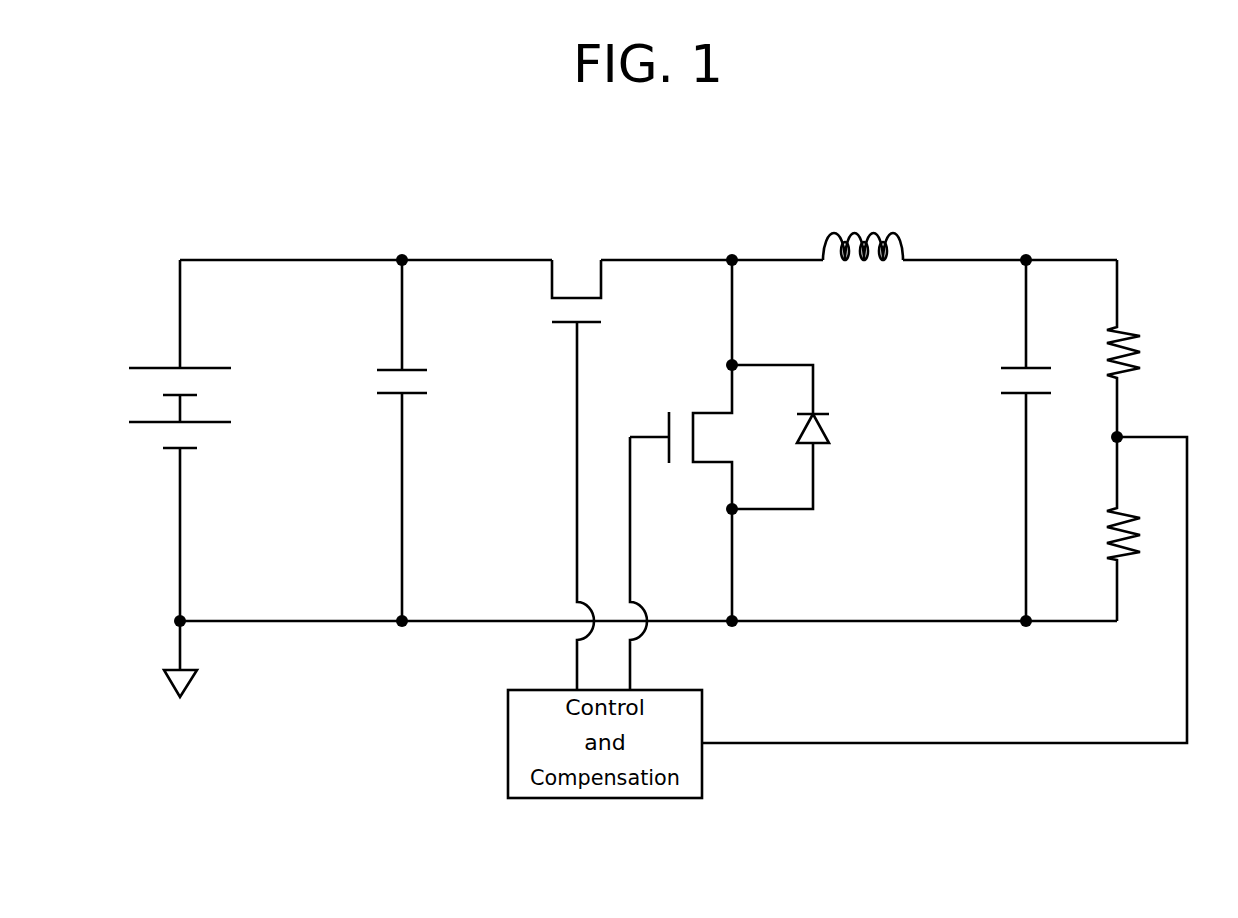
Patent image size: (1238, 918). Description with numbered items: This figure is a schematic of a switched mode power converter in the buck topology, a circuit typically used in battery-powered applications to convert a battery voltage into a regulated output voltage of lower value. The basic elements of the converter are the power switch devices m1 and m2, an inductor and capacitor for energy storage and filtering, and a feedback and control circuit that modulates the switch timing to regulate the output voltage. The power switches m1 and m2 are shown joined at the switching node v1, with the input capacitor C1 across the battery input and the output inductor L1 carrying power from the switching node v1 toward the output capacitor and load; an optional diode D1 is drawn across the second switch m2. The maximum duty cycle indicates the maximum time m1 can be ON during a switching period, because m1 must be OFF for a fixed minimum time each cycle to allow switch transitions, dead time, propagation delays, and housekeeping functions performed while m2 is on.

The power switch m1 is at (576, 455).
The power switch m2 is at (684, 524).
The switching node voltage v1 is at (732, 293).
The input capacitor C1 is at (423, 440).
The output inductor L1 is at (863, 268).
The optional diode D1 is at (852, 437).